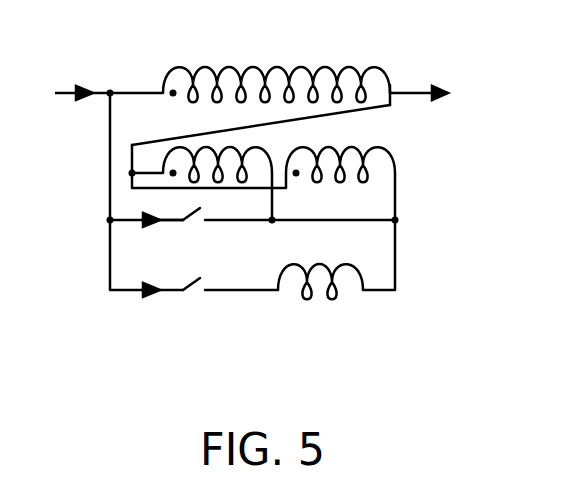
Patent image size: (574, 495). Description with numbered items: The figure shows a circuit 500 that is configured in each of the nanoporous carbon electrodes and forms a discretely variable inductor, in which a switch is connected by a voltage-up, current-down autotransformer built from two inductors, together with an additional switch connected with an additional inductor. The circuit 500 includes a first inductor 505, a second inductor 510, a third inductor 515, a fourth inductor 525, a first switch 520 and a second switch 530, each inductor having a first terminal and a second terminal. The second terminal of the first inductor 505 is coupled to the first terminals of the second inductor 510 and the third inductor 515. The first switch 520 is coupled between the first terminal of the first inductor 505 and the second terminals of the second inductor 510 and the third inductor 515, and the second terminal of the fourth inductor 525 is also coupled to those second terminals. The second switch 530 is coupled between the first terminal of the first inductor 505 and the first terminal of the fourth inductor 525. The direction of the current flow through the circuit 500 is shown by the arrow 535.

The circuit 500 is at (278, 218).
The first inductor 505 is at (302, 66).
The second inductor 510 is at (258, 147).
The third inductor 515 is at (391, 153).
The first switch 520 is at (197, 226).
The fourth inductor 525 is at (321, 264).
The second switch 530 is at (197, 296).
The arrow 535 is at (79, 85).